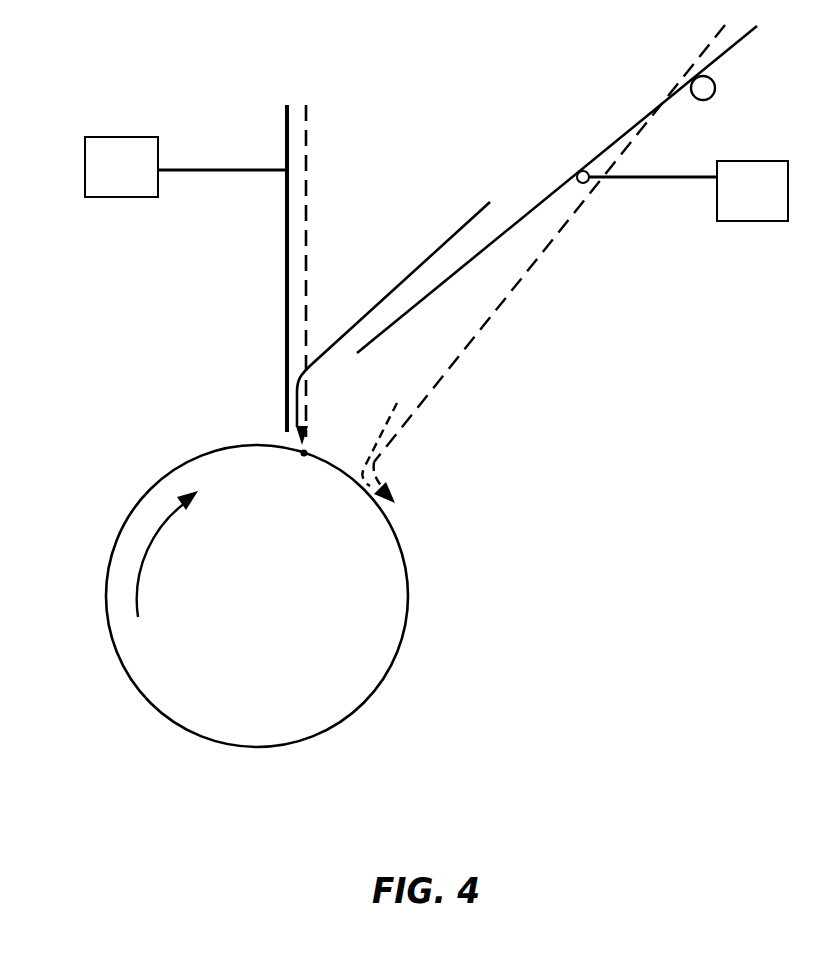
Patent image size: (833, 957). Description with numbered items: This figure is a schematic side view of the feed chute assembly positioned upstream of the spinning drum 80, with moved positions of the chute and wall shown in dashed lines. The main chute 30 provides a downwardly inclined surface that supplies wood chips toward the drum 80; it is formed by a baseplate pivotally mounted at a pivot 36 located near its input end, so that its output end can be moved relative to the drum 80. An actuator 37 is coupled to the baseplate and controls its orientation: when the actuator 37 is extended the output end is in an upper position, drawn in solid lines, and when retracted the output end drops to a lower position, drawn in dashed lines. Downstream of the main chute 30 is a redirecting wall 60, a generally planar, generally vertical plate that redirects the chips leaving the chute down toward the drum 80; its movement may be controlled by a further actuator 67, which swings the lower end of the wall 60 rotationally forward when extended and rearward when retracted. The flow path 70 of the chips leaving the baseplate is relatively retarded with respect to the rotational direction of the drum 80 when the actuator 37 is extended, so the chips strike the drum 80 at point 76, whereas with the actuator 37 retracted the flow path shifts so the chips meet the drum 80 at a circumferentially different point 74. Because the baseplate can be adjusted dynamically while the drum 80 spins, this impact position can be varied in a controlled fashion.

The main chute 30 is at (549, 193).
The pivot 36 is at (716, 92).
The actuator 37 is at (757, 207).
The redirecting wall 60 is at (287, 351).
The actuator 67 is at (112, 188).
The flow path 70 is at (425, 261).
The point 74 is at (347, 478).
The point 76 is at (295, 470).
The drum 80 is at (120, 665).